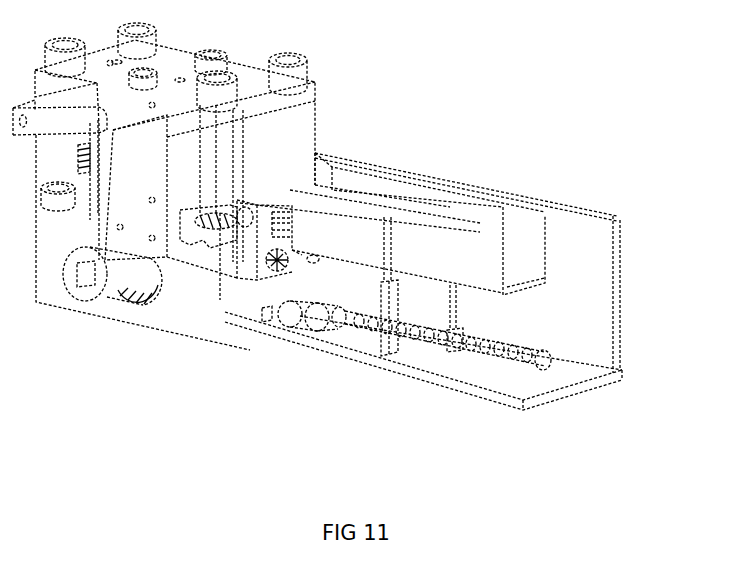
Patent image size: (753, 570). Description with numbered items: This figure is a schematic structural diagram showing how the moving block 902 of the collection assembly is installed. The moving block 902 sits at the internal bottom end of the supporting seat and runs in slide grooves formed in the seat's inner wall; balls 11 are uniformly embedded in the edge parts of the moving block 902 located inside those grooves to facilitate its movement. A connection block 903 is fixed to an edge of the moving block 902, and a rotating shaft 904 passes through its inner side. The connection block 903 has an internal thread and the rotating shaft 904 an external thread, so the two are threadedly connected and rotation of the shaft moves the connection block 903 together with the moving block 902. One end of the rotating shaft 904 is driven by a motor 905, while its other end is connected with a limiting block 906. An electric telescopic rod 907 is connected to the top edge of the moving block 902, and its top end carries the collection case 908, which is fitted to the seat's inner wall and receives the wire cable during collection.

The balls 11 is at (376, 370).
The moving block 902 is at (433, 365).
The connection block 903 is at (306, 328).
The rotating shaft 904 is at (300, 316).
The motor 905 is at (263, 313).
The limiting block 906 is at (545, 364).
The electric telescopic rod 907 is at (393, 307).
The collection case 908 is at (438, 188).